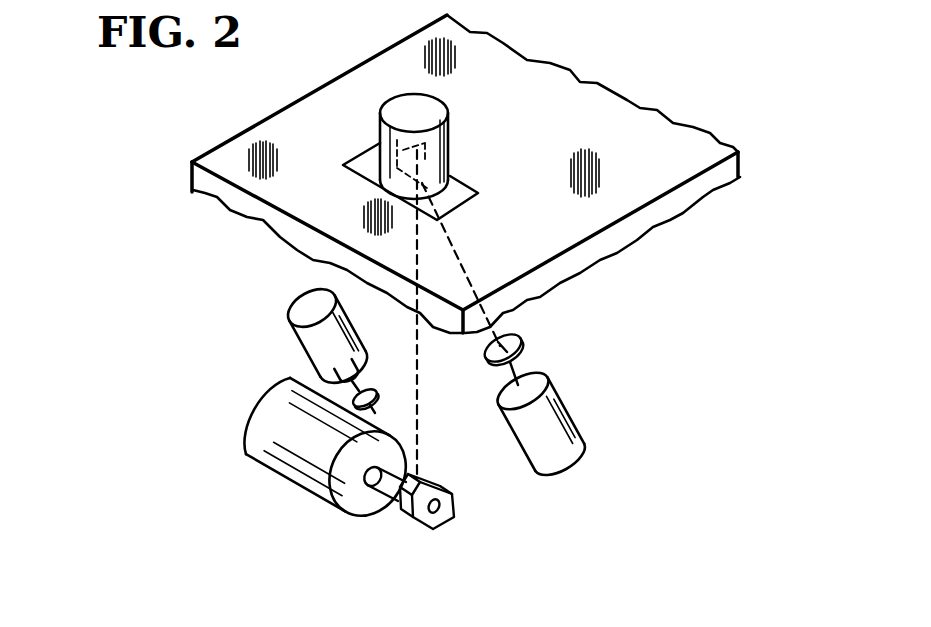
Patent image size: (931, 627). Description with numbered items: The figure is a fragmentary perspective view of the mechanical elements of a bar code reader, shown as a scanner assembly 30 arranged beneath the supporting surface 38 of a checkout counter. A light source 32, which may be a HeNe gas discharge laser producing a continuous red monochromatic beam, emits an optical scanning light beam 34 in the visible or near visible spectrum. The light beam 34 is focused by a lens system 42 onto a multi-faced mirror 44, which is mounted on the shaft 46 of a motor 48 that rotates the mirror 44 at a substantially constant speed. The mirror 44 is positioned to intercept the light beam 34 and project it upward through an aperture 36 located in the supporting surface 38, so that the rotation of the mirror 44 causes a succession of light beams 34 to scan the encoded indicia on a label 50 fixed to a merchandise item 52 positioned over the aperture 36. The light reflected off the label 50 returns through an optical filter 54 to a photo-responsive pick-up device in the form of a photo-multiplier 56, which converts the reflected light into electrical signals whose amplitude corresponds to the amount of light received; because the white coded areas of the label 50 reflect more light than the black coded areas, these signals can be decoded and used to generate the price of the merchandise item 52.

The scanner assembly 30 is at (152, 352).
The light source 32 is at (298, 307).
The light beam 34 is at (420, 423).
The aperture 36 is at (360, 157).
The supporting surface 38 is at (657, 110).
The lens system 42 is at (373, 394).
The multi-faced mirror 44 is at (443, 529).
The shaft 46 is at (385, 490).
The motor 48 is at (263, 410).
The label 50 is at (452, 152).
The merchandise item 52 is at (428, 104).
The optical filter 54 is at (522, 350).
The photo-multiplier 56 is at (578, 423).